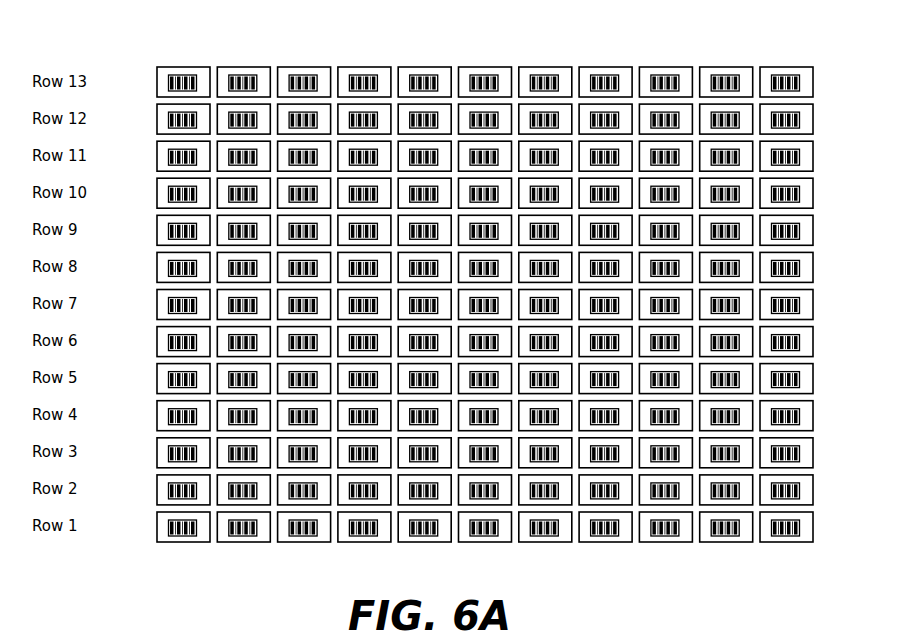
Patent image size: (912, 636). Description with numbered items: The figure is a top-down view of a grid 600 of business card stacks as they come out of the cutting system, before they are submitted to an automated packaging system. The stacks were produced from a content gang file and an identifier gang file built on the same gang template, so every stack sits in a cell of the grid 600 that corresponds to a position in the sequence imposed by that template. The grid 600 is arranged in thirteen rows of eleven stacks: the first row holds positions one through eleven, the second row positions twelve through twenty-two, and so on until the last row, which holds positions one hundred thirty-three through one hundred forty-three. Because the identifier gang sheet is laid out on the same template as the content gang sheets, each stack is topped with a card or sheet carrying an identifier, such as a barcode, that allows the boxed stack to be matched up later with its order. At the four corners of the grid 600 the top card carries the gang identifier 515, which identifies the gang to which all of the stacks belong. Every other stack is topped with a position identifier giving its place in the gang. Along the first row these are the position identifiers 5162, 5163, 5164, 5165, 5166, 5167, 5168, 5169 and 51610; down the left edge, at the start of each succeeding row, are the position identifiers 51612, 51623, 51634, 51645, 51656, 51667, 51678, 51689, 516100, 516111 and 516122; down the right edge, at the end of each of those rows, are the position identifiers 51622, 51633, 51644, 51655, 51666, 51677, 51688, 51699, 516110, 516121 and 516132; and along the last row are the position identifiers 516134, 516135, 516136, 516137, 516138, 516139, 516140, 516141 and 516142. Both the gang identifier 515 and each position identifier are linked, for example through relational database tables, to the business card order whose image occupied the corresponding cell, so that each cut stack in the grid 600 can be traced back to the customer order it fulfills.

The grid 600 is at (144, 31).
The gang identifier 515 is at (169, 82).
The position identifier 5162 is at (241, 536).
The position identifier 5163 is at (301, 536).
The position identifier 5164 is at (361, 536).
The position identifier 5165 is at (422, 536).
The position identifier 5166 is at (482, 536).
The position identifier 5167 is at (542, 536).
The position identifier 5168 is at (603, 536).
The position identifier 5169 is at (663, 536).
The position identifier 51610 is at (723, 536).
The position identifier 51612 is at (169, 490).
The position identifier 51622 is at (800, 490).
The position identifier 51623 is at (169, 453).
The position identifier 51633 is at (800, 453).
The position identifier 51634 is at (169, 416).
The position identifier 51644 is at (800, 416).
The position identifier 51645 is at (169, 379).
The position identifier 51655 is at (800, 379).
The position identifier 51656 is at (169, 342).
The position identifier 51666 is at (800, 342).
The position identifier 51667 is at (169, 304).
The position identifier 51677 is at (800, 304).
The position identifier 51678 is at (169, 267).
The position identifier 51688 is at (800, 267).
The position identifier 51689 is at (169, 230).
The position identifier 51699 is at (800, 230).
The position identifier 516100 is at (169, 193).
The position identifier 516110 is at (800, 193).
The position identifier 516111 is at (169, 156).
The position identifier 516121 is at (800, 156).
The position identifier 516122 is at (169, 119).
The position identifier 516132 is at (800, 119).
The position identifier 516134 is at (241, 75).
The position identifier 516135 is at (301, 75).
The position identifier 516136 is at (361, 75).
The position identifier 516137 is at (422, 75).
The position identifier 516138 is at (482, 75).
The position identifier 516139 is at (542, 75).
The position identifier 516140 is at (603, 75).
The position identifier 516141 is at (663, 75).
The position identifier 516142 is at (723, 75).